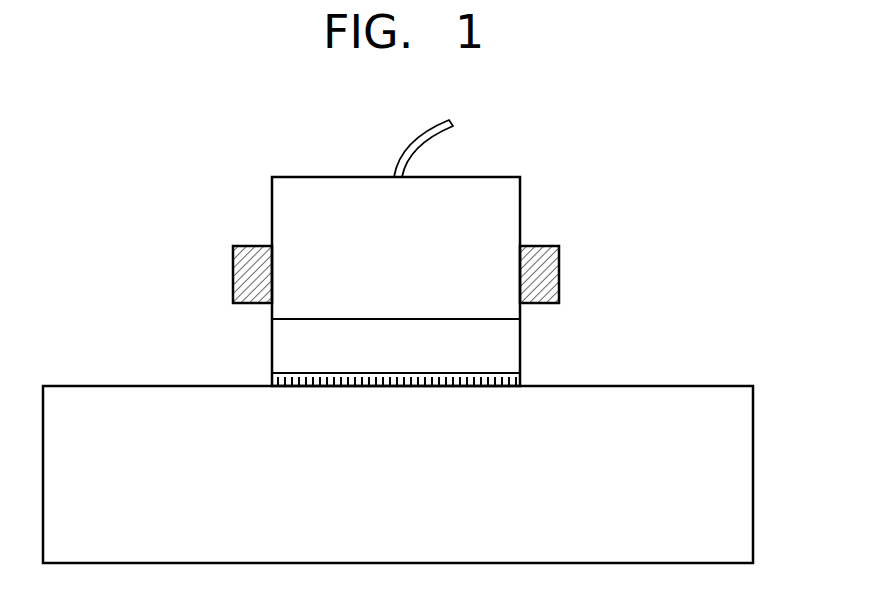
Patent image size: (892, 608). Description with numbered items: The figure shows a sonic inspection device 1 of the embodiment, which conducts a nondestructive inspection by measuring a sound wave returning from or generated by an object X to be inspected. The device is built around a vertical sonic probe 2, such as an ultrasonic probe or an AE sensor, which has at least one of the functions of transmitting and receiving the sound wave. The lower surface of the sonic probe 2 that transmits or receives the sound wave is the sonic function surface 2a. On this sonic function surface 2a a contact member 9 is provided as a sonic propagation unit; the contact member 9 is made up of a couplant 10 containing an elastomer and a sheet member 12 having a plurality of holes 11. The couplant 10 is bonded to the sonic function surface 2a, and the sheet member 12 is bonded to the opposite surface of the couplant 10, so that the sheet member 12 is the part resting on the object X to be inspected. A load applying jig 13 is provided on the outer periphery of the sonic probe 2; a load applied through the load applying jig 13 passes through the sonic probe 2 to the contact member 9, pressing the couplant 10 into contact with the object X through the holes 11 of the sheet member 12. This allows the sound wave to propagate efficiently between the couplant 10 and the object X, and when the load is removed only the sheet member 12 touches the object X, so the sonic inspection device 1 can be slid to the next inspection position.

The sonic inspection device 1 is at (613, 159).
The sonic probe 2 is at (521, 207).
The sonic function surface 2a is at (468, 319).
The load applying jig 13 is at (560, 272).
The contact member 9 is at (205, 317).
The couplant 10 is at (271, 330).
The holes 11 is at (508, 380).
The sheet member 12 is at (271, 377).
The object to be inspected X is at (755, 455).